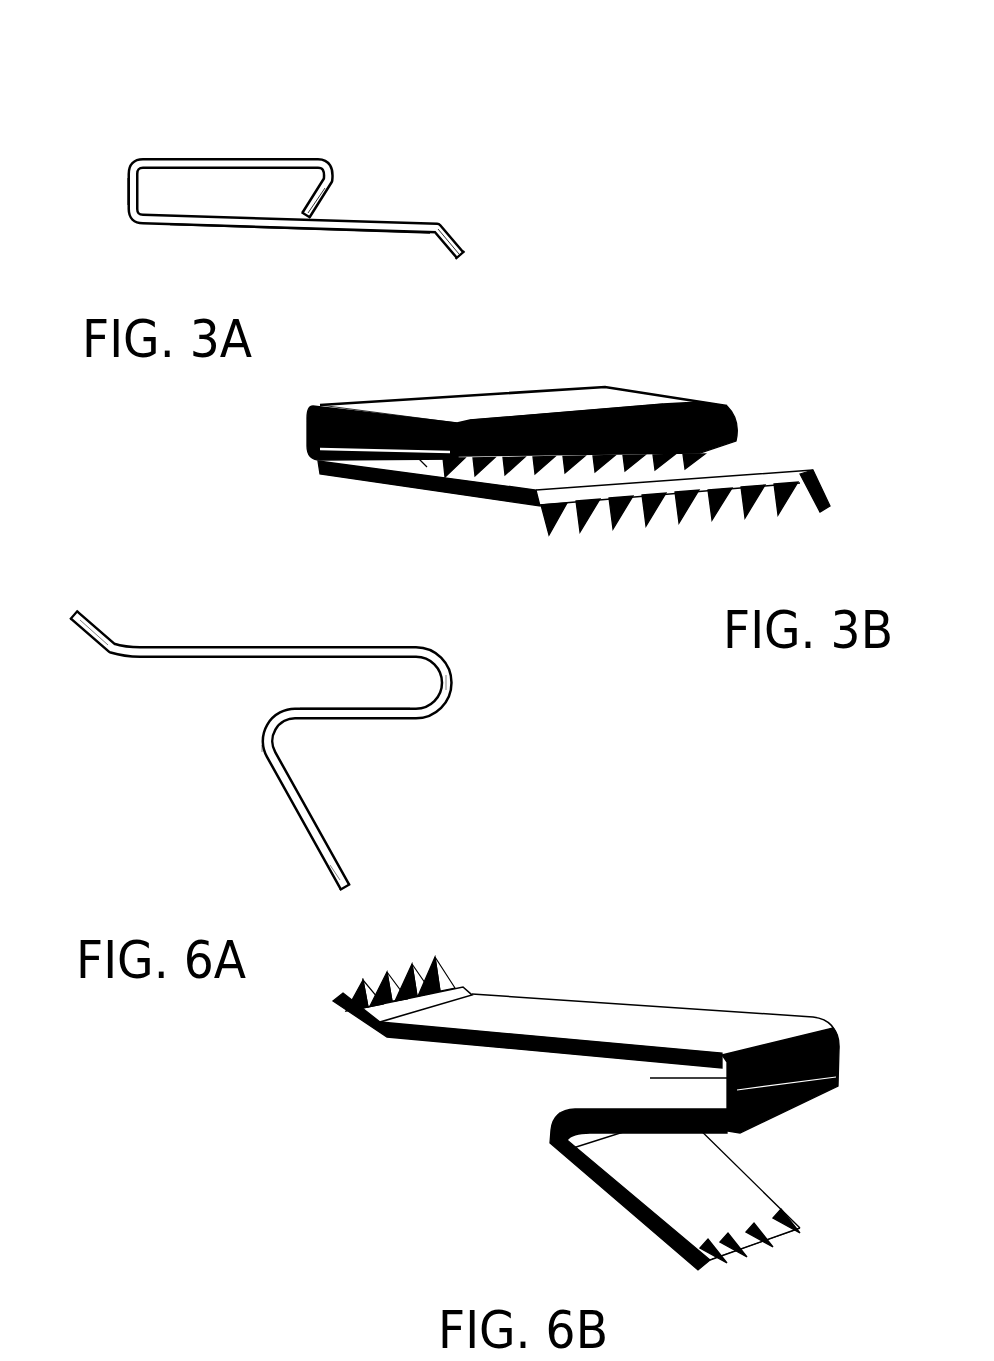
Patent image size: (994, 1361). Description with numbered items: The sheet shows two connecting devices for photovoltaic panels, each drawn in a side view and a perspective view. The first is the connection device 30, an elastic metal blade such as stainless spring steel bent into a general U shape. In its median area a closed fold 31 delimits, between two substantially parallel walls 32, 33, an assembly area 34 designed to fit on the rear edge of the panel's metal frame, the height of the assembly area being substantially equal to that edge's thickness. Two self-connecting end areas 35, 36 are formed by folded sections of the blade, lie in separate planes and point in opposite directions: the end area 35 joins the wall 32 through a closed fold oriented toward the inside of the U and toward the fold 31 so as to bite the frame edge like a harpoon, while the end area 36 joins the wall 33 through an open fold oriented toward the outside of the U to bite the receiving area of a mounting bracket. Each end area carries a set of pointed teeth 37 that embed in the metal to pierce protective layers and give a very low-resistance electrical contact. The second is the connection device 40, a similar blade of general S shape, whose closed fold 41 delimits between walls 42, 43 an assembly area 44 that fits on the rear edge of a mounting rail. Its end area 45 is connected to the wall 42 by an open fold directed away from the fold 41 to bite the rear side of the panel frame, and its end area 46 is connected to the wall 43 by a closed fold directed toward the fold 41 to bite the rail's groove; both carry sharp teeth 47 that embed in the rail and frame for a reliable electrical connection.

In FIG. 3A, the connection device 30 is at (203, 128).
In FIG. 3B, the connection device 30 is at (553, 413).
In FIG. 3A, the closed fold 31 is at (125, 190).
In FIG. 3B, the closed fold 31 is at (307, 422).
In FIG. 3A, the wall 32 is at (255, 163).
In FIG. 3B, the wall 32 is at (525, 398).
In FIG. 3A, the wall 33 is at (197, 228).
In FIG. 3B, the wall 33 is at (385, 487).
In FIG. 3A, the assembly area 34 is at (157, 183).
In FIG. 3B, the assembly area 34 is at (395, 418).
In FIG. 3A, the self-connecting end area 35 is at (329, 209).
In FIG. 3B, the self-connecting end area 35 is at (741, 425).
In FIG. 3A, the self-connecting end area 36 is at (461, 242).
In FIG. 3B, the self-connecting end area 36 is at (538, 523).
In FIG. 3B, the teeth 37 is at (810, 480).
In FIG. 6A, the connection device 40 is at (478, 693).
In FIG. 6B, the connection device 40 is at (567, 1066).
In FIG. 6A, the closed fold 41 is at (448, 663).
In FIG. 6B, the closed fold 41 is at (831, 1033).
In FIG. 6A, the wall 42 is at (348, 650).
In FIG. 6B, the wall 42 is at (608, 1007).
In FIG. 6A, the wall 43 is at (380, 713).
In FIG. 6B, the wall 43 is at (645, 1080).
In FIG. 6A, the assembly area 44 is at (352, 687).
In FIG. 6B, the assembly area 44 is at (650, 1078).
In FIG. 6A, the self-connecting end area 45 is at (103, 626).
In FIG. 6B, the self-connecting end area 45 is at (454, 966).
In FIG. 6A, the self-connecting end area 46 is at (347, 865).
In FIG. 6B, the self-connecting end area 46 is at (781, 1203).
In FIG. 6B, the teeth 47 is at (383, 1003).